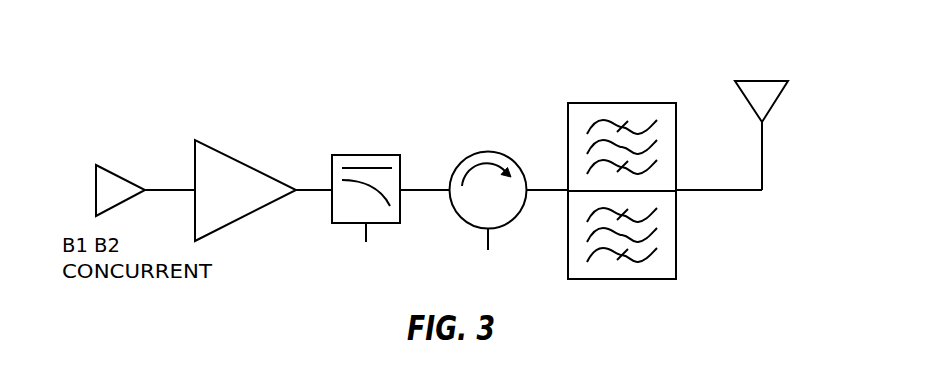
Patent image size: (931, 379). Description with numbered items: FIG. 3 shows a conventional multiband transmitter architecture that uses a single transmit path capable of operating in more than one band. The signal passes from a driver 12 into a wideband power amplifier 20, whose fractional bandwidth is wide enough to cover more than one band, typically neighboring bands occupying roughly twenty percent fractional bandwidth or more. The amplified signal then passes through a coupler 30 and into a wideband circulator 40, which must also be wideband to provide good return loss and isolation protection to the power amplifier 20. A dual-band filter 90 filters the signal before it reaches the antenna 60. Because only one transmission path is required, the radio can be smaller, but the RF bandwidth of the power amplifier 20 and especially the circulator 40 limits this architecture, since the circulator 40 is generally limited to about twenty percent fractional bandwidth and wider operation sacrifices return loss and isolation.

The driver amplifier 12 is at (120, 158).
The wideband power amplifier 20 is at (245, 177).
The coupler 30 is at (369, 196).
The wideband circulator 40 is at (492, 175).
The antenna 60 is at (760, 111).
The dual-band filter 90 is at (623, 155).